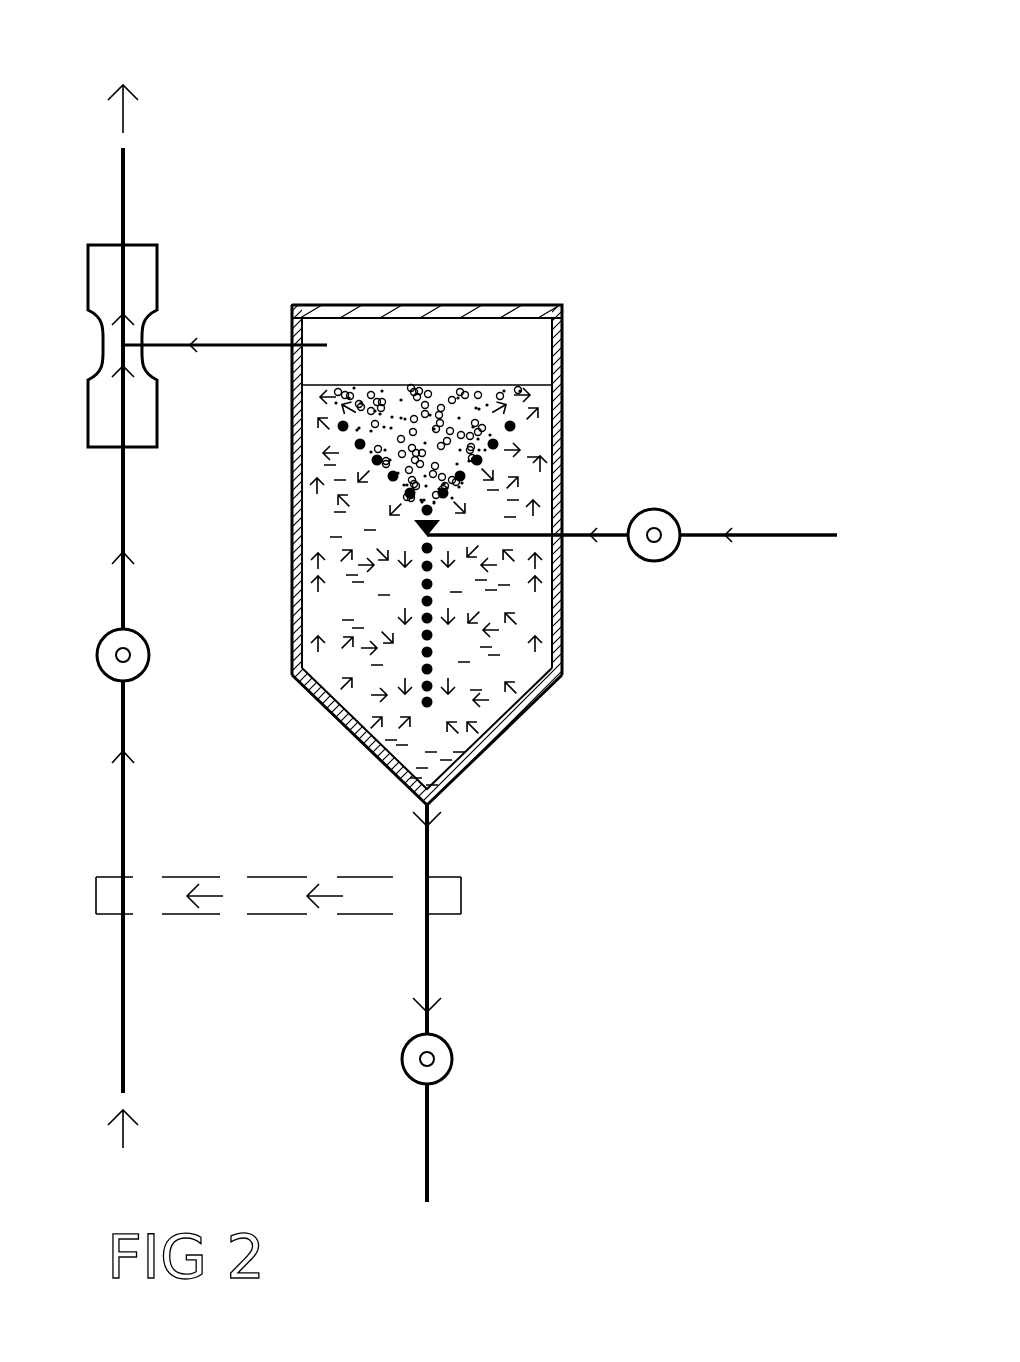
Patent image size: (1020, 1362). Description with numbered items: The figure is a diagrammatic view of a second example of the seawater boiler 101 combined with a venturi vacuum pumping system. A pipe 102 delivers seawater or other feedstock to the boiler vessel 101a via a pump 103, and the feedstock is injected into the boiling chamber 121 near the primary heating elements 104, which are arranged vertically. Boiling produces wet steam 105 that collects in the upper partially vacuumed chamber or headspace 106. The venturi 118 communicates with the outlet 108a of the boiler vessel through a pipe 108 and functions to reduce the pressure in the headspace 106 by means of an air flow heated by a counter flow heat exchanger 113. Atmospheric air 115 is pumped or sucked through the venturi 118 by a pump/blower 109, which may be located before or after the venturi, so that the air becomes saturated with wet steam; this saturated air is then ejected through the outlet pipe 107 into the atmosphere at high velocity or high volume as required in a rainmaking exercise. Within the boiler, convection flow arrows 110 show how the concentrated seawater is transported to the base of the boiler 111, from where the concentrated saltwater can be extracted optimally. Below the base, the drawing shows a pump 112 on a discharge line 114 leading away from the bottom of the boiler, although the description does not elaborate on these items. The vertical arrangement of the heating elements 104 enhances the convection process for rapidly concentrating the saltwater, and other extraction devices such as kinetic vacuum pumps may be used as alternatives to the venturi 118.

The seawater boiler 101 is at (415, 268).
The boiler vessel 101a is at (440, 303).
The pipe 102 is at (760, 535).
The pump 103 is at (668, 508).
The primary heating elements 104 is at (498, 443).
The wet steam 105 is at (472, 387).
The headspace 106 is at (458, 343).
The outlet pipe 107 is at (127, 187).
The pipe 108 is at (223, 340).
The outlet 108a is at (292, 348).
The pump/blower 109 is at (142, 637).
The convection flow arrows 110 is at (363, 648).
The base of the boiler 111 is at (465, 775).
The discharge pump 112 is at (455, 1057).
The counter flow heat exchanger 113 is at (332, 898).
The discharge line 114 is at (432, 1135).
The atmospheric air 115 is at (130, 1136).
The venturi 118 is at (158, 255).
The boiling chamber 121 is at (427, 465).